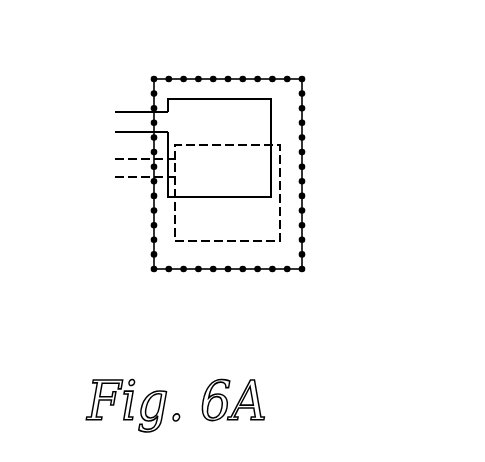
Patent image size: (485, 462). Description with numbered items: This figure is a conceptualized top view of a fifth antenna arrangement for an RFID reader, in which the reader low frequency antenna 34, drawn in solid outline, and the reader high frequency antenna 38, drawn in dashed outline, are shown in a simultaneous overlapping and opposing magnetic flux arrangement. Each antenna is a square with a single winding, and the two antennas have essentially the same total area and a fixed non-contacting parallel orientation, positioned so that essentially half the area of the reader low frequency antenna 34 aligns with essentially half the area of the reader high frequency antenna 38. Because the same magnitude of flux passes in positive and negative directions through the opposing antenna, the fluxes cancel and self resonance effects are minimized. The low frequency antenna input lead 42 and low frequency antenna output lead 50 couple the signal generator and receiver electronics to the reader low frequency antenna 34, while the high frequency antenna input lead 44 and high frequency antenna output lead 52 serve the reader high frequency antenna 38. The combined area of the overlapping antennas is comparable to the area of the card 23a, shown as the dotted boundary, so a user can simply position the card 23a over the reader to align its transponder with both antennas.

The card 23a is at (272, 80).
The reader low frequency antenna 34 is at (272, 118).
The reader high frequency antenna 38 is at (280, 210).
The low frequency antenna input lead 42 is at (132, 112).
The high frequency antenna input lead 44 is at (138, 159).
The low frequency antenna output lead 50 is at (125, 131).
The high frequency antenna output lead 52 is at (138, 178).